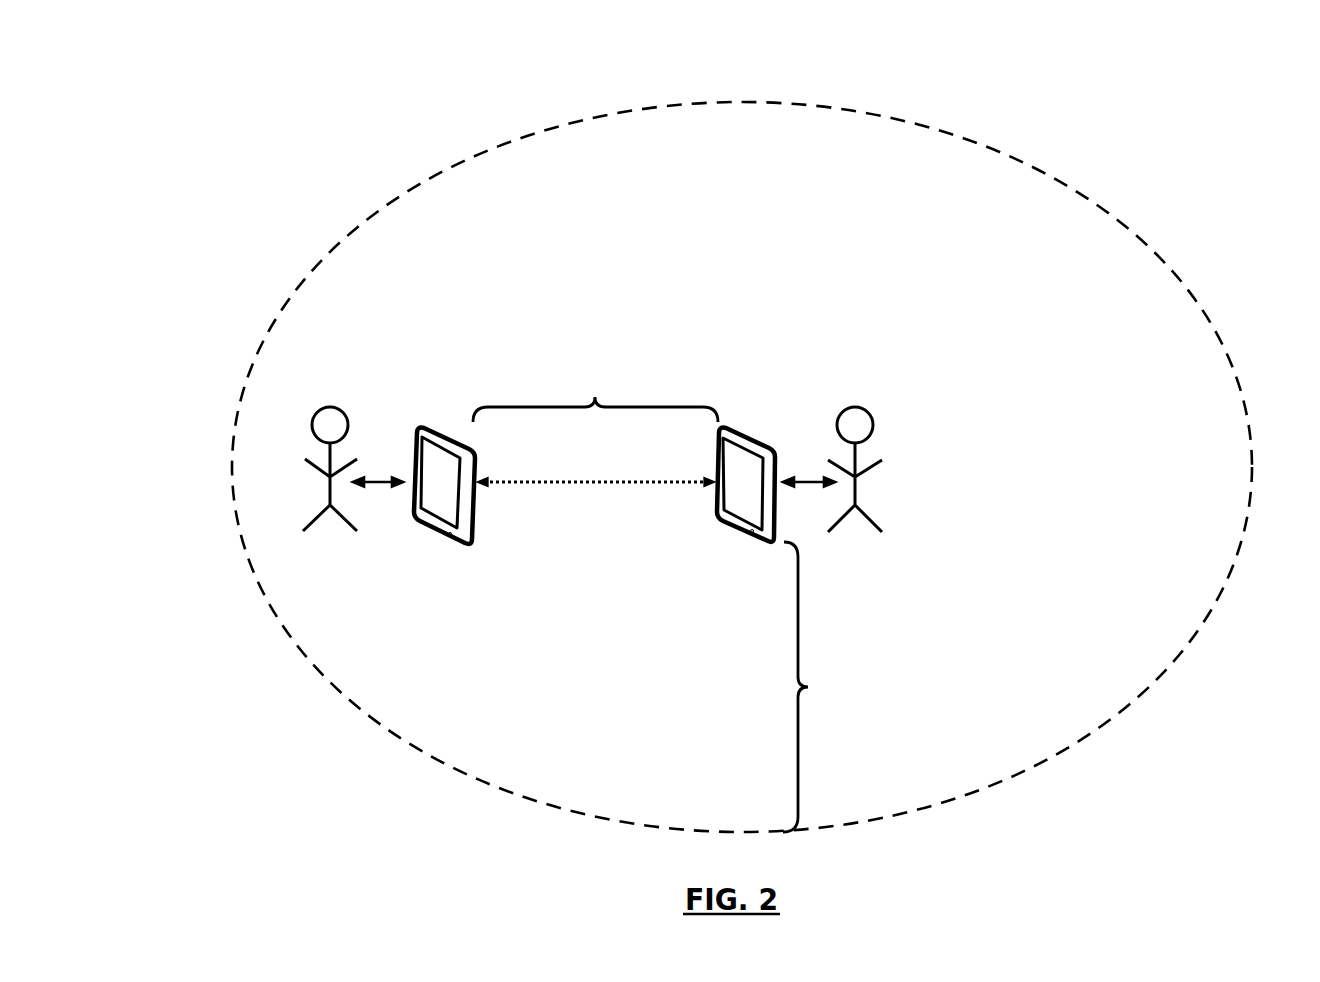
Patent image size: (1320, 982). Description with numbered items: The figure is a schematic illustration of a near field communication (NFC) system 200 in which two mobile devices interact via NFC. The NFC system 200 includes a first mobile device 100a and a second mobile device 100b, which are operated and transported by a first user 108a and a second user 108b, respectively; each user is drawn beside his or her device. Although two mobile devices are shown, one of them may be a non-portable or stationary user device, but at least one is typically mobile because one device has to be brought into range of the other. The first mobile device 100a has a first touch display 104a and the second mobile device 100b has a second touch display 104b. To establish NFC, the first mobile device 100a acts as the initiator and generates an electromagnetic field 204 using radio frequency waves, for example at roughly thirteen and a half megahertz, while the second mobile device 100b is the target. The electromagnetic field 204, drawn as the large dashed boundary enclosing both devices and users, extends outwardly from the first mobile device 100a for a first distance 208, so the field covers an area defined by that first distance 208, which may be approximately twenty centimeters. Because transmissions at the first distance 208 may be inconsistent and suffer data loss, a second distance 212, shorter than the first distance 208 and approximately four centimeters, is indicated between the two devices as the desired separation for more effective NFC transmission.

The near field communication (NFC) system 200 is at (262, 99).
The electromagnetic field 204 is at (754, 103).
The first mobile device 100a is at (744, 476).
The second mobile device 100b is at (451, 478).
The first touch display 104a is at (738, 503).
The second touch display 104b is at (451, 507).
The first user 108a is at (877, 388).
The second user 108b is at (349, 549).
The second distance 212 is at (595, 431).
The first distance 208 is at (817, 687).